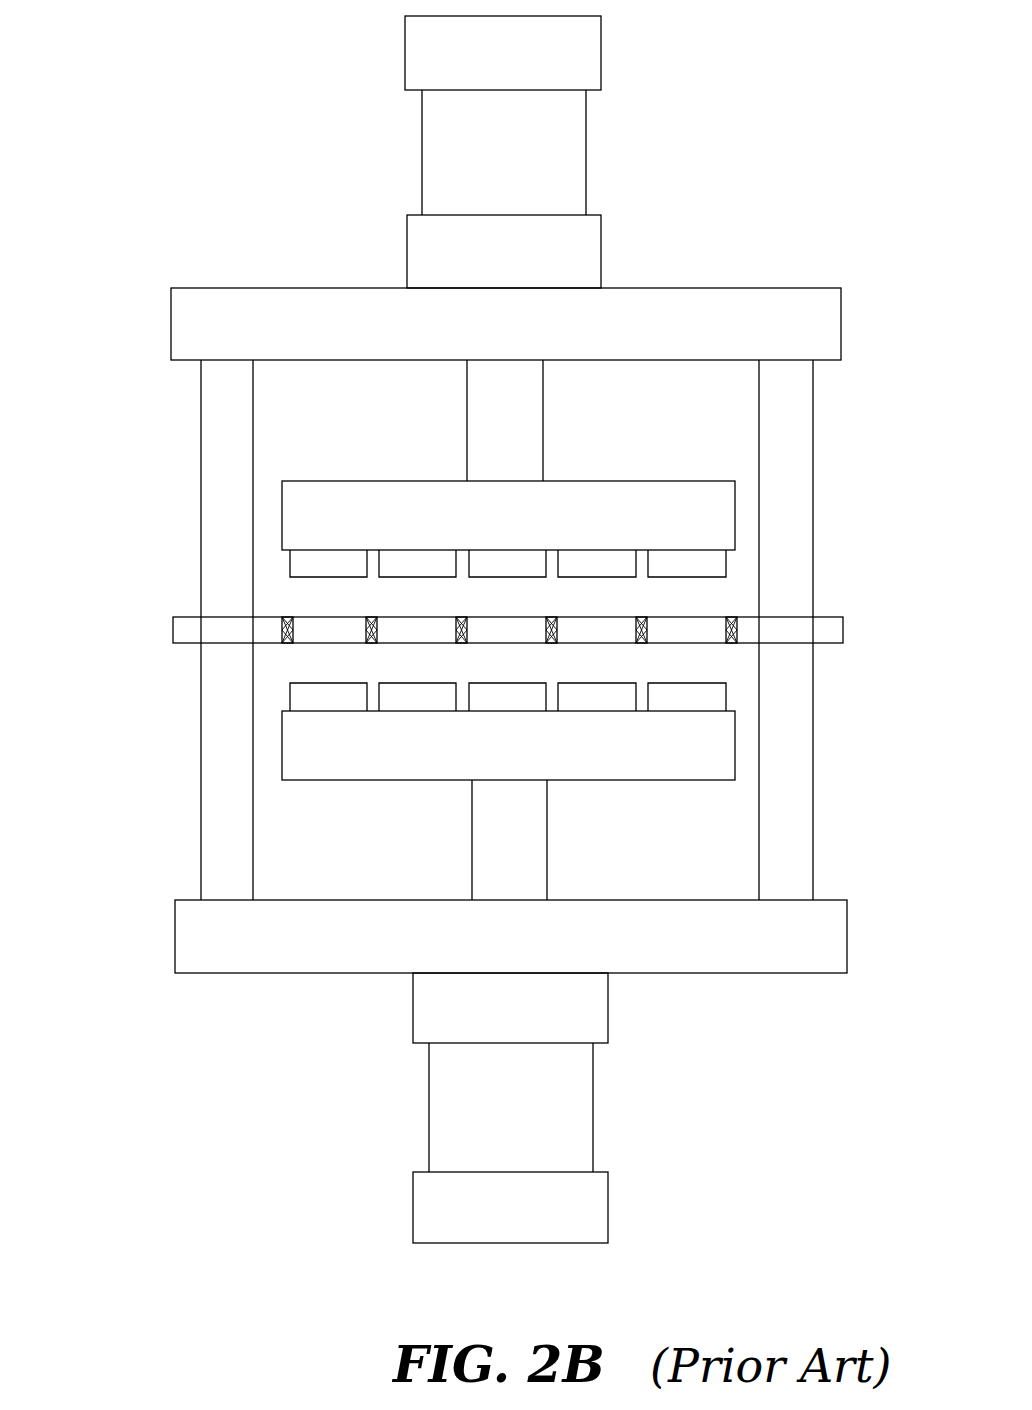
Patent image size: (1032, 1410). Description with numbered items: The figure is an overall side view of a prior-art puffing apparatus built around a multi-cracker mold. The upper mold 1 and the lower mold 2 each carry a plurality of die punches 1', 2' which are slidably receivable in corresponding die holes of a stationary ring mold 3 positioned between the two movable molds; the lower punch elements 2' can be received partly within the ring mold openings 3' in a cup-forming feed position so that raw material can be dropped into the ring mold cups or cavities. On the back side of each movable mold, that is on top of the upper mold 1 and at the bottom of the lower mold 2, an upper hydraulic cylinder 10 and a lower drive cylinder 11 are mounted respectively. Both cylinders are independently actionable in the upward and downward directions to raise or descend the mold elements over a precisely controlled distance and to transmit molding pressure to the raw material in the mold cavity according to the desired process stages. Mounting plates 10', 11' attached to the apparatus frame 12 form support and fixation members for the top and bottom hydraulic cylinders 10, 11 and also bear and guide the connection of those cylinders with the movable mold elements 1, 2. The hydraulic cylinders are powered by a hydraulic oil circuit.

The upper hydraulic cylinder 10 is at (459, 152).
The mounting plate 10' is at (449, 324).
The apparatus frame 12 is at (210, 392).
The upper mold 1 is at (425, 506).
The die punches 1' is at (418, 548).
The stationary ring mold 3 is at (529, 597).
The ring mold openings 3' is at (588, 663).
The die punches 2' is at (416, 681).
The lower mold 2 is at (425, 745).
The mounting plate 11' is at (454, 936).
The lower drive cylinder 11 is at (467, 1108).